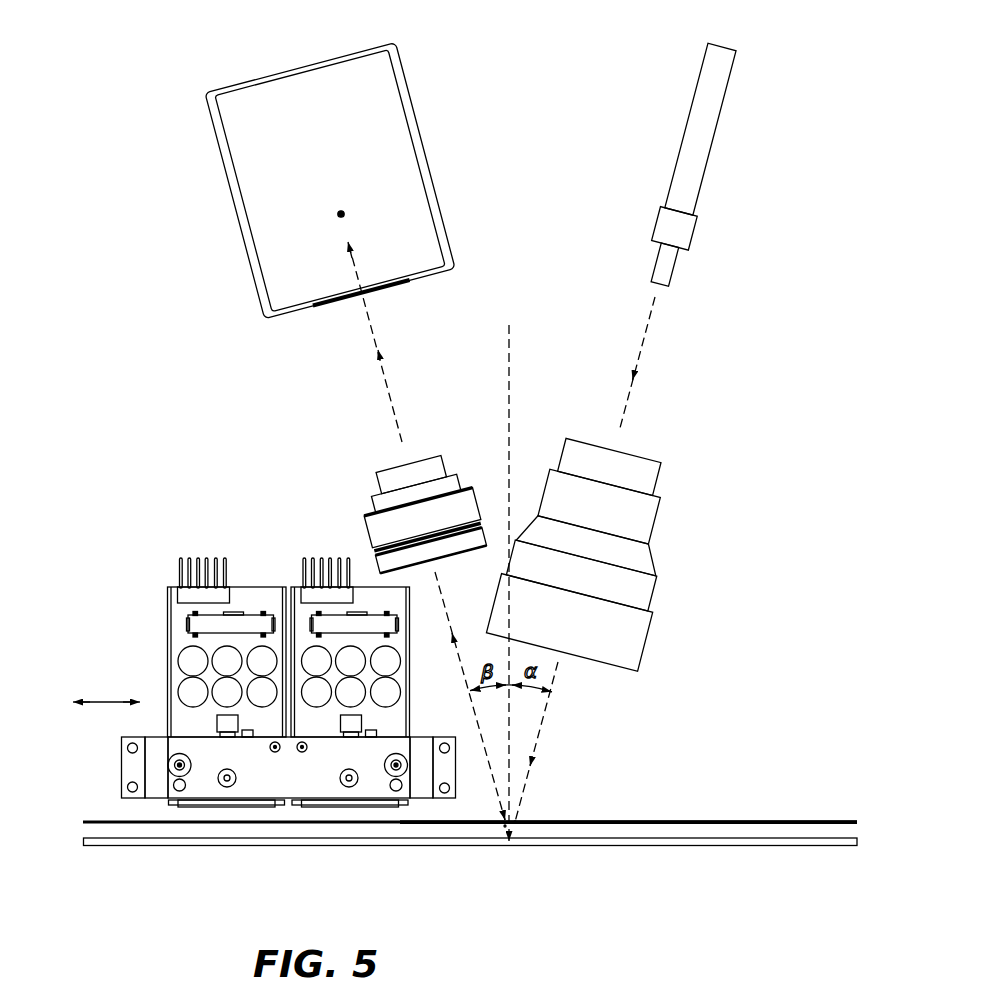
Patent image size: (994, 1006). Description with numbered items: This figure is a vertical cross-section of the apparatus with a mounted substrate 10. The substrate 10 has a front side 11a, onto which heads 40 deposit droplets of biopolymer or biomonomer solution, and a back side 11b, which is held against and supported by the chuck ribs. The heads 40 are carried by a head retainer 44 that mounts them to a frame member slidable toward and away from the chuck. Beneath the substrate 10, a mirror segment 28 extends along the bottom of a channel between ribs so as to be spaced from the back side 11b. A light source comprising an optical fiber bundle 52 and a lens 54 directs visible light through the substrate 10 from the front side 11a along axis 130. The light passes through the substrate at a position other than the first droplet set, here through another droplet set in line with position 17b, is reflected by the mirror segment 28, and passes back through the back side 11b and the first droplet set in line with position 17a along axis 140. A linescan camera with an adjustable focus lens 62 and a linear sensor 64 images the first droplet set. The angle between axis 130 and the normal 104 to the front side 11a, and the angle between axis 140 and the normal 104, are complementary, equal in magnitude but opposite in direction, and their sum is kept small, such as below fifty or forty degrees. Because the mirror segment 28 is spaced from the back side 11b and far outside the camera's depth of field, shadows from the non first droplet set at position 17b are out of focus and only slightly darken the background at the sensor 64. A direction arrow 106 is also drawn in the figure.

The substrate 10 is at (857, 822).
The front side 11a is at (718, 822).
The back side 11b is at (597, 824).
The first droplet set position 17a is at (503, 828).
The non first droplet set position 17b is at (515, 820).
The mirror segment 28 is at (857, 843).
The head 40 is at (205, 808).
The head retainer 44 is at (266, 783).
The optical fiber bundle 52 is at (713, 142).
The lens 54 is at (633, 630).
The adjustable focus lens 62 is at (388, 529).
The linear sensor 64 is at (338, 243).
The normal 104 is at (510, 353).
The carriage scan direction 106 is at (113, 698).
The axis 130 is at (645, 337).
The axis 140 is at (385, 382).